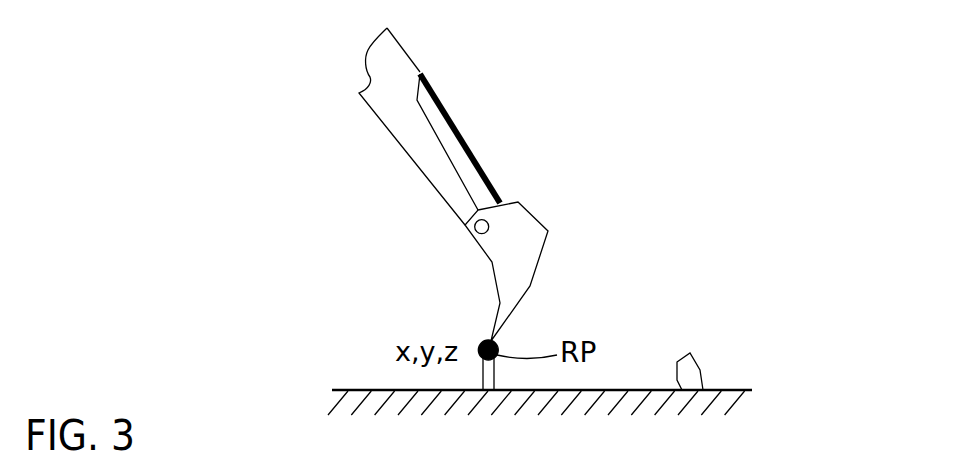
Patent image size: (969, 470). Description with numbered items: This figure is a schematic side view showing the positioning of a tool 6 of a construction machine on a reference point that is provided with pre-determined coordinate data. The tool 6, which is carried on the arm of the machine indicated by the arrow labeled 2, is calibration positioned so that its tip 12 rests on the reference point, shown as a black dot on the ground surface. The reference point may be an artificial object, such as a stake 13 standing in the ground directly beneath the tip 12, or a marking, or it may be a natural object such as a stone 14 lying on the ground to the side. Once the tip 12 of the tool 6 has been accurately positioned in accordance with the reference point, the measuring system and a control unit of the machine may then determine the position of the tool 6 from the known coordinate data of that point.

The excavator arm 2 is at (348, 157).
The tool 6 is at (527, 250).
The tip 12 is at (487, 340).
The stake 13 is at (484, 364).
The stone 14 is at (688, 368).